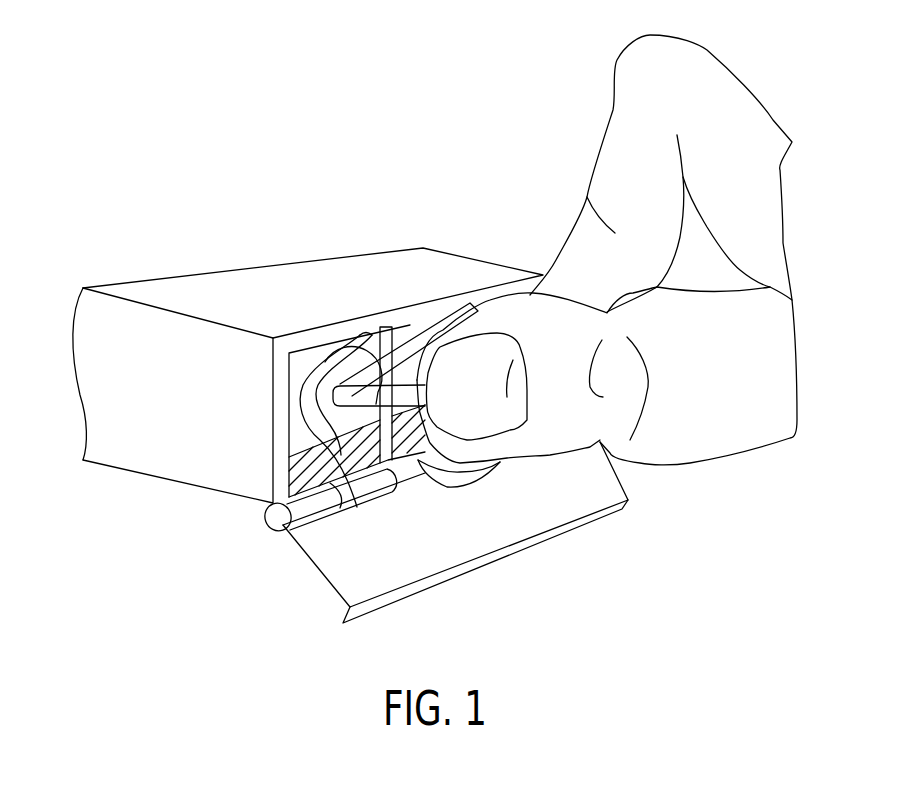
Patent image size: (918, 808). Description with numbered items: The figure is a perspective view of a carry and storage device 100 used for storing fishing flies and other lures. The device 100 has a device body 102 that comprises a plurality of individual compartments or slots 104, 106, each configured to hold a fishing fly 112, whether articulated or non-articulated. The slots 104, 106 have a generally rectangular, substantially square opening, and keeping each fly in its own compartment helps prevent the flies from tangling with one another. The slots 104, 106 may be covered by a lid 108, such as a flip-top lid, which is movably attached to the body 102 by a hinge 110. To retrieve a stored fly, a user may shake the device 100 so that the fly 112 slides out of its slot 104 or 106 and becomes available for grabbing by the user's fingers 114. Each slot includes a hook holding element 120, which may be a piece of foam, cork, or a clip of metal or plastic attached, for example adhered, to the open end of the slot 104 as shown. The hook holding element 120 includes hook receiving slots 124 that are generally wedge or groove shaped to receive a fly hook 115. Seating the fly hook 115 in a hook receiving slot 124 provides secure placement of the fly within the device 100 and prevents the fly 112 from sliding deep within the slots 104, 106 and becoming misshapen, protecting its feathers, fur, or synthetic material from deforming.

The carry and storage device 100 is at (448, 140).
The device body 102 is at (126, 310).
The slot 104 is at (340, 352).
The slot 106 is at (397, 333).
The lid 108 is at (565, 515).
The hinge 110 is at (273, 531).
The fishing fly 112 is at (294, 417).
The user's fingers 114 is at (712, 72).
The fly hook 115 is at (462, 482).
The hook holding element 120 is at (294, 473).
The hook receiving slot 124 is at (352, 492).